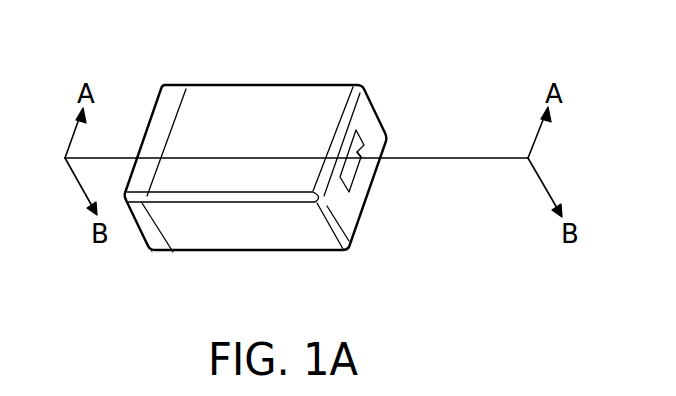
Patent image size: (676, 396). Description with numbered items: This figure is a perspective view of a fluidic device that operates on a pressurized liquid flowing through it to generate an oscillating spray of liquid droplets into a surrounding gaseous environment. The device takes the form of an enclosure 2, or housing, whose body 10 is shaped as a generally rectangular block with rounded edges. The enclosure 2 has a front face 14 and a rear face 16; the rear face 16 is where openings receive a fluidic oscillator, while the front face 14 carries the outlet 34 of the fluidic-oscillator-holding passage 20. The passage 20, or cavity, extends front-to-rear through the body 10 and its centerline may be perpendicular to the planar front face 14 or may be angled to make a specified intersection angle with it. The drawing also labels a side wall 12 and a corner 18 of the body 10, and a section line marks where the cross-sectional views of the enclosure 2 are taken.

The enclosure 2 is at (392, 93).
The body 10 is at (263, 240).
The front side wall 12 is at (193, 230).
The front face 14 is at (373, 135).
The rear face 16 is at (125, 208).
The right rounded corner 18 is at (315, 242).
The passage 20 is at (342, 172).
The outlet 34 is at (363, 153).